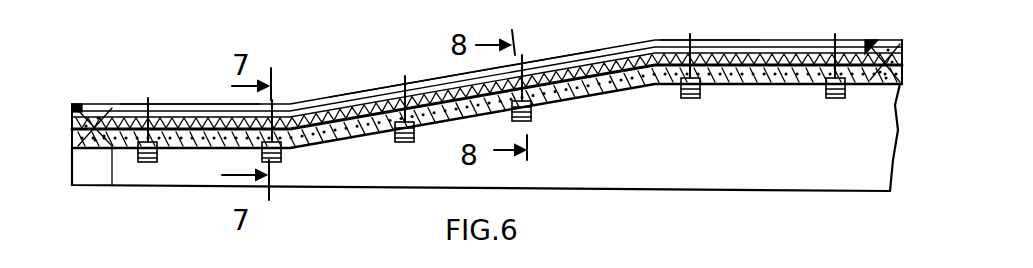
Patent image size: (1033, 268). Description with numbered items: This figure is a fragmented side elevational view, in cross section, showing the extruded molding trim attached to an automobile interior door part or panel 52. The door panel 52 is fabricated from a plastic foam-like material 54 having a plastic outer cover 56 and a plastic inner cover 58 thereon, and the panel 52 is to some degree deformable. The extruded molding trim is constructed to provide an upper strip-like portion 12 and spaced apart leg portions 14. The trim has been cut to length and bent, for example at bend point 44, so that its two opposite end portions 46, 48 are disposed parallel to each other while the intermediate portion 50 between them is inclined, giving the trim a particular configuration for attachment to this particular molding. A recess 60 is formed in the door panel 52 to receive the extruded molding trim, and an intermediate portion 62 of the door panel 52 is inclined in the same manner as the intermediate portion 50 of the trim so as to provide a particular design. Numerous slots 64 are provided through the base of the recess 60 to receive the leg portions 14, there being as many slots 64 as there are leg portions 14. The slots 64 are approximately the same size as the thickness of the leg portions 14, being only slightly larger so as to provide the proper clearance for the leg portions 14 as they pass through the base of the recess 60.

The upper strip-like portion 12 is at (487, 74).
The leg portions 14 is at (278, 110).
The bend point 44 is at (655, 55).
The end portion 46 is at (207, 112).
The end portion 48 is at (775, 46).
The intermediate portion 50 is at (560, 72).
The door panel 52 is at (878, 90).
The plastic foam-like material 54 is at (80, 128).
The plastic outer cover 56 is at (93, 103).
The plastic inner cover 58 is at (113, 187).
The recess 60 is at (118, 110).
The intermediate portion 62 is at (409, 90).
The slots 64 is at (149, 100).